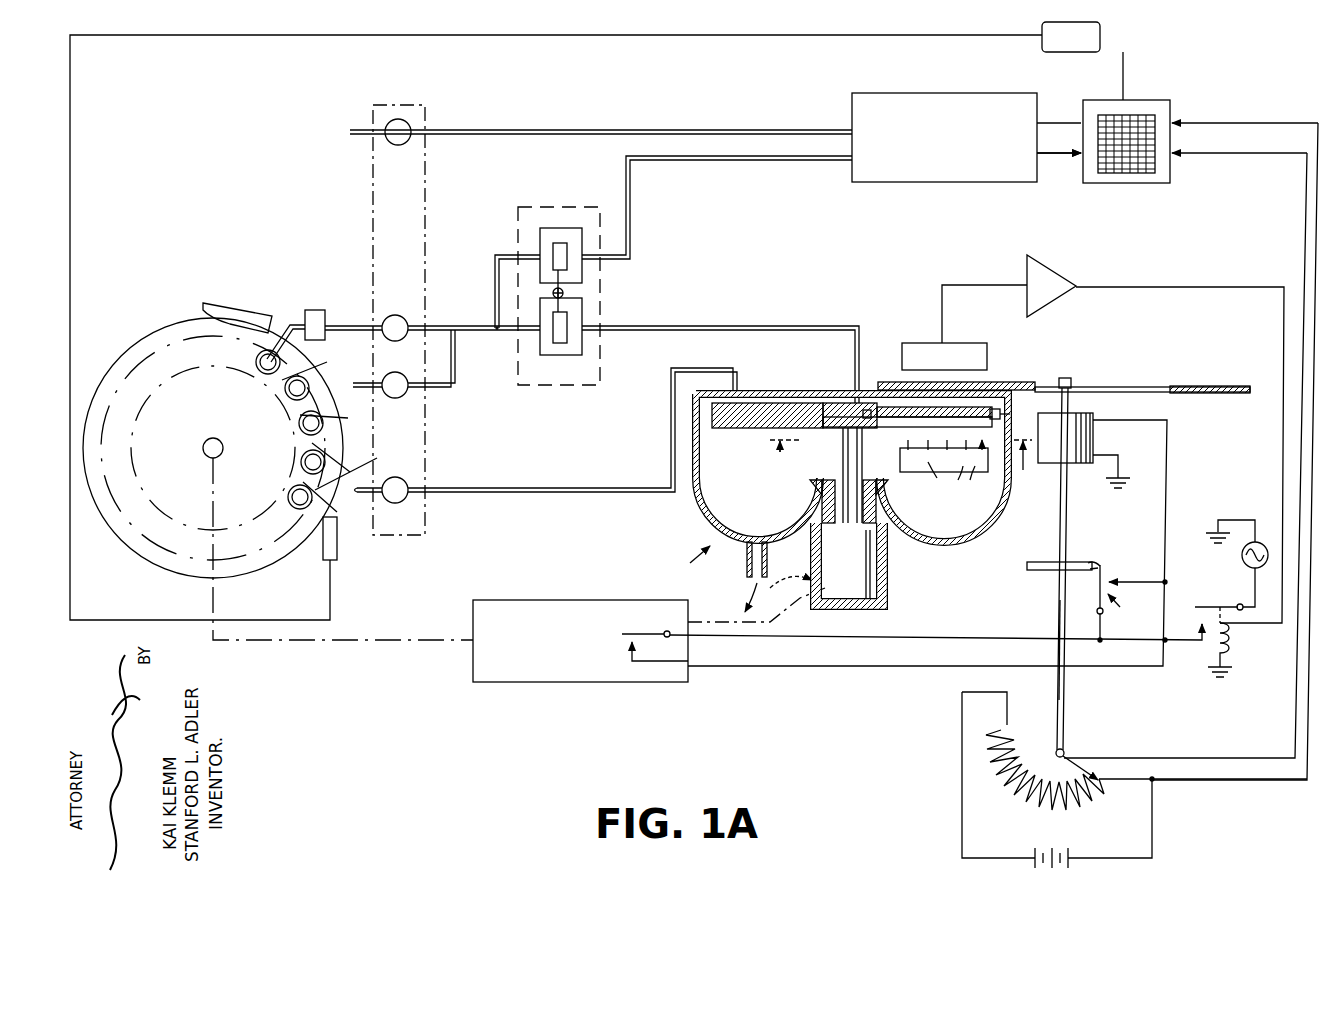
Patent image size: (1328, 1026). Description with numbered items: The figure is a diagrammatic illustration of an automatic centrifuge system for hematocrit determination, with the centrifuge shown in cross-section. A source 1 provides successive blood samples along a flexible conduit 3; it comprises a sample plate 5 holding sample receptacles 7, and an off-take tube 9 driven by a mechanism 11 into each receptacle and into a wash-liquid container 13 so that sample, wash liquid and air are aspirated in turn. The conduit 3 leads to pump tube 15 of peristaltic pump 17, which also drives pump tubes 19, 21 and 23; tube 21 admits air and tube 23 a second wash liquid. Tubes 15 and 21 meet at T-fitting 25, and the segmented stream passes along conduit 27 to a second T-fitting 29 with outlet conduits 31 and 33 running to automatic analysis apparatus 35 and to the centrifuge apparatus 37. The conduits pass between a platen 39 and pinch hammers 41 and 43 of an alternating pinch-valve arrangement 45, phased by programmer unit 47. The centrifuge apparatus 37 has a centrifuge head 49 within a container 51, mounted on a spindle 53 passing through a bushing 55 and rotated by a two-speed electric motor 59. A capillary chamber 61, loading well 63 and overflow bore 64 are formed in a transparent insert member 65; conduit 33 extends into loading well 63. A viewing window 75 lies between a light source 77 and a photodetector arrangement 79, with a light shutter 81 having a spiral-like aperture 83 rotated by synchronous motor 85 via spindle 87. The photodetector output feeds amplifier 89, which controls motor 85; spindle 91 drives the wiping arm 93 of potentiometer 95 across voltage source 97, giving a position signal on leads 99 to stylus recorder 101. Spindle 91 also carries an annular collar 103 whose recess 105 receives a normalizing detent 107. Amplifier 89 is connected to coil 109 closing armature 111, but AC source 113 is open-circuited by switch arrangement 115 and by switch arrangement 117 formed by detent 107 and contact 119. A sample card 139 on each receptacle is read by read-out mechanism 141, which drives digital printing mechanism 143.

The source 1 is at (124, 286).
The flexible conduit 3 is at (349, 327).
The sample plate 5 is at (125, 360).
The sample receptacles 7 is at (303, 452).
The off-take tube 9 is at (290, 320).
The mechanism 11 is at (313, 310).
The wash-liquid container 13 is at (248, 300).
The pump tube 15 is at (410, 328).
The peristaltic pump 17 is at (370, 183).
The pump tube 19 is at (412, 128).
The pump tube 21 is at (412, 380).
The pump tube 23 is at (410, 490).
The T-fitting 25 is at (455, 326).
The conduit 27 is at (482, 316).
The T-fitting 29 is at (495, 332).
The outlet conduit 31 is at (632, 218).
The outlet conduit 33 is at (640, 326).
The automatic analysis apparatus 35 is at (960, 98).
The automatic centrifuge apparatus 37 is at (857, 483).
The platen 39 is at (558, 296).
The pinch hammer 41 is at (555, 243).
The pinch hammer 43 is at (555, 338).
The alternating pinch-valve arrangement 45 is at (585, 308).
The programmer unit 47 is at (492, 660).
The centrifuge head 49 is at (760, 428).
The container 51 is at (692, 515).
The spindle 53 is at (842, 462).
The bushing 55 is at (822, 486).
The 2-speed electric motor 59 is at (876, 585).
The capillary chamber 61 is at (982, 430).
The loading well 63 is at (845, 405).
The overflow bore 64 is at (868, 410).
The insert member 65 is at (970, 404).
The viewing window 75 is at (902, 446).
The light source 77 is at (945, 483).
The photodetector arrangement 79 is at (916, 348).
The light shutter 81 is at (1030, 385).
The spiral-like aperture 83 is at (900, 382).
The synchronous motor 85 is at (1095, 437).
The spindle 87 is at (1070, 408).
The amplifier 89 is at (1063, 268).
The spindle 91 is at (1056, 625).
The wiping arm 93 is at (1075, 765).
The potentiometer 95 is at (1102, 782).
The voltage source 97 is at (1072, 852).
The leads 99 is at (1320, 238).
The stylus recorder 101 is at (1165, 103).
The annular collar 103 is at (1070, 562).
The recess 105 is at (1088, 568).
The normalizing detent 107 is at (1097, 590).
The coil 109 is at (1228, 648).
The armature 111 is at (1203, 605).
The AC source 113 is at (1242, 560).
The switch arrangement 115 is at (628, 646).
The switch arrangement 117 is at (1134, 612).
The contact 119 is at (1010, 414).
The sample card 139 is at (365, 469).
The read-out mechanism 141 is at (337, 552).
The digital printing mechanism 143 is at (1100, 33).